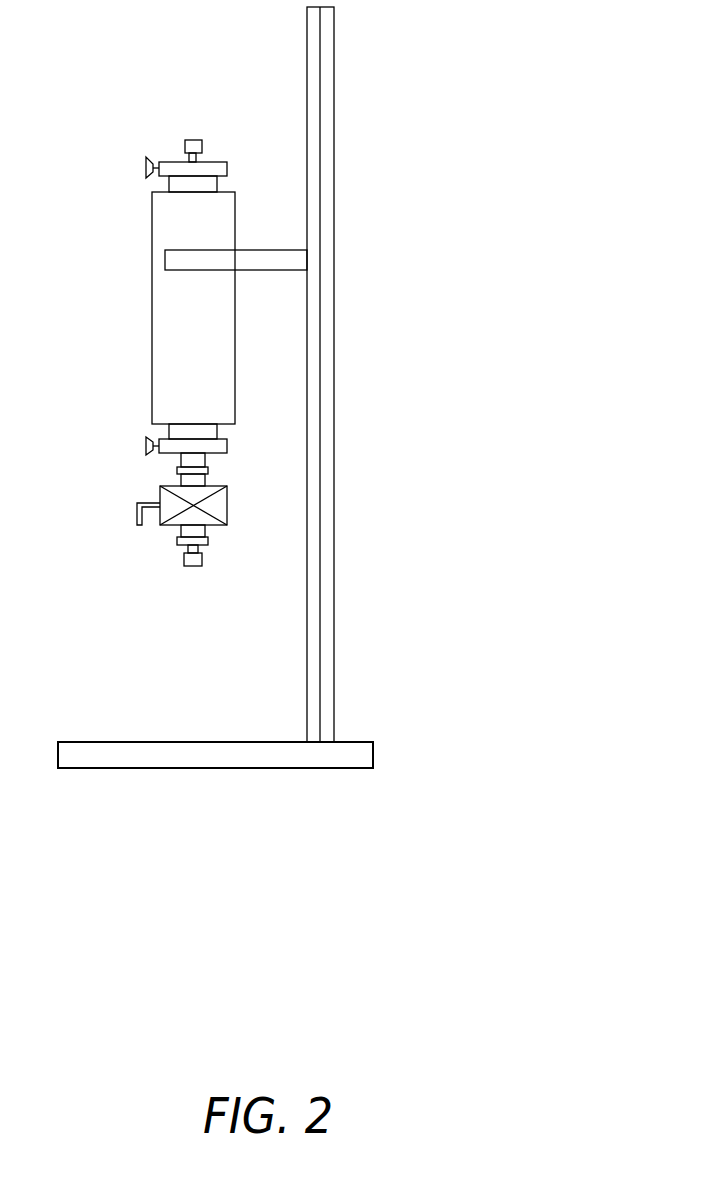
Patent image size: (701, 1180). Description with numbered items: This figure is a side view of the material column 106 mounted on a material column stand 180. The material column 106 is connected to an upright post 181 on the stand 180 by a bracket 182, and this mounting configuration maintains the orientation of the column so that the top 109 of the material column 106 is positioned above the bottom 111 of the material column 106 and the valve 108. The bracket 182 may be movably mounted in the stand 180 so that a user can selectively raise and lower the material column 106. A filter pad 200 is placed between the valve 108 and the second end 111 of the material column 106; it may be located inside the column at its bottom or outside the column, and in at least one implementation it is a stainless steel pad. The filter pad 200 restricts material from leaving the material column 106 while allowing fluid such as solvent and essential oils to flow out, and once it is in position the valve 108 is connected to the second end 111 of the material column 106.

The material column 106 is at (142, 304).
The valve 108 is at (238, 507).
The top of the material column 109 is at (198, 158).
The bottom of the material column 111 is at (228, 433).
The material column stand 180 is at (382, 210).
The upright post 181 is at (334, 70).
The bracket 182 is at (265, 250).
The filter pad 200 is at (168, 471).